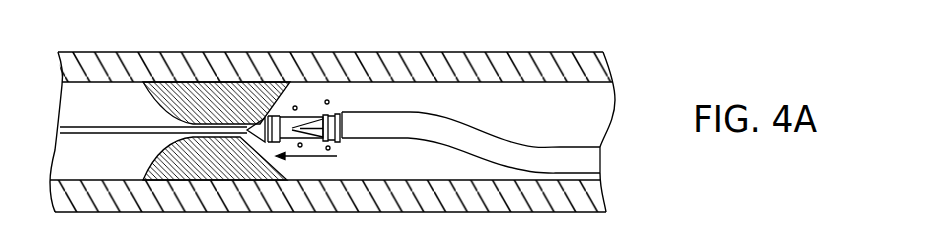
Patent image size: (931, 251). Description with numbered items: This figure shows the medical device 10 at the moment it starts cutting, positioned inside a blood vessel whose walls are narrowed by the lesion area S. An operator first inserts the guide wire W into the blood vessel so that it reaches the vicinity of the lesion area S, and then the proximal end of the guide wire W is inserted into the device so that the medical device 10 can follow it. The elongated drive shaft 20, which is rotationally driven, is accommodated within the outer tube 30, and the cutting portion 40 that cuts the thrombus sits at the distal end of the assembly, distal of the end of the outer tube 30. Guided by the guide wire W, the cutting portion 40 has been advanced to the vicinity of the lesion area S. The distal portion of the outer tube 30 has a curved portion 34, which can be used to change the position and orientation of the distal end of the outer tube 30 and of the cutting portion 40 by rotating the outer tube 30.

The medical device 10 is at (372, 96).
The drive shaft 20 is at (412, 112).
The outer tube 30 is at (467, 122).
The curved portion 34 is at (562, 162).
The cutting portion 40 is at (256, 84).
The lesion area S is at (197, 81).
The guide wire W is at (120, 134).